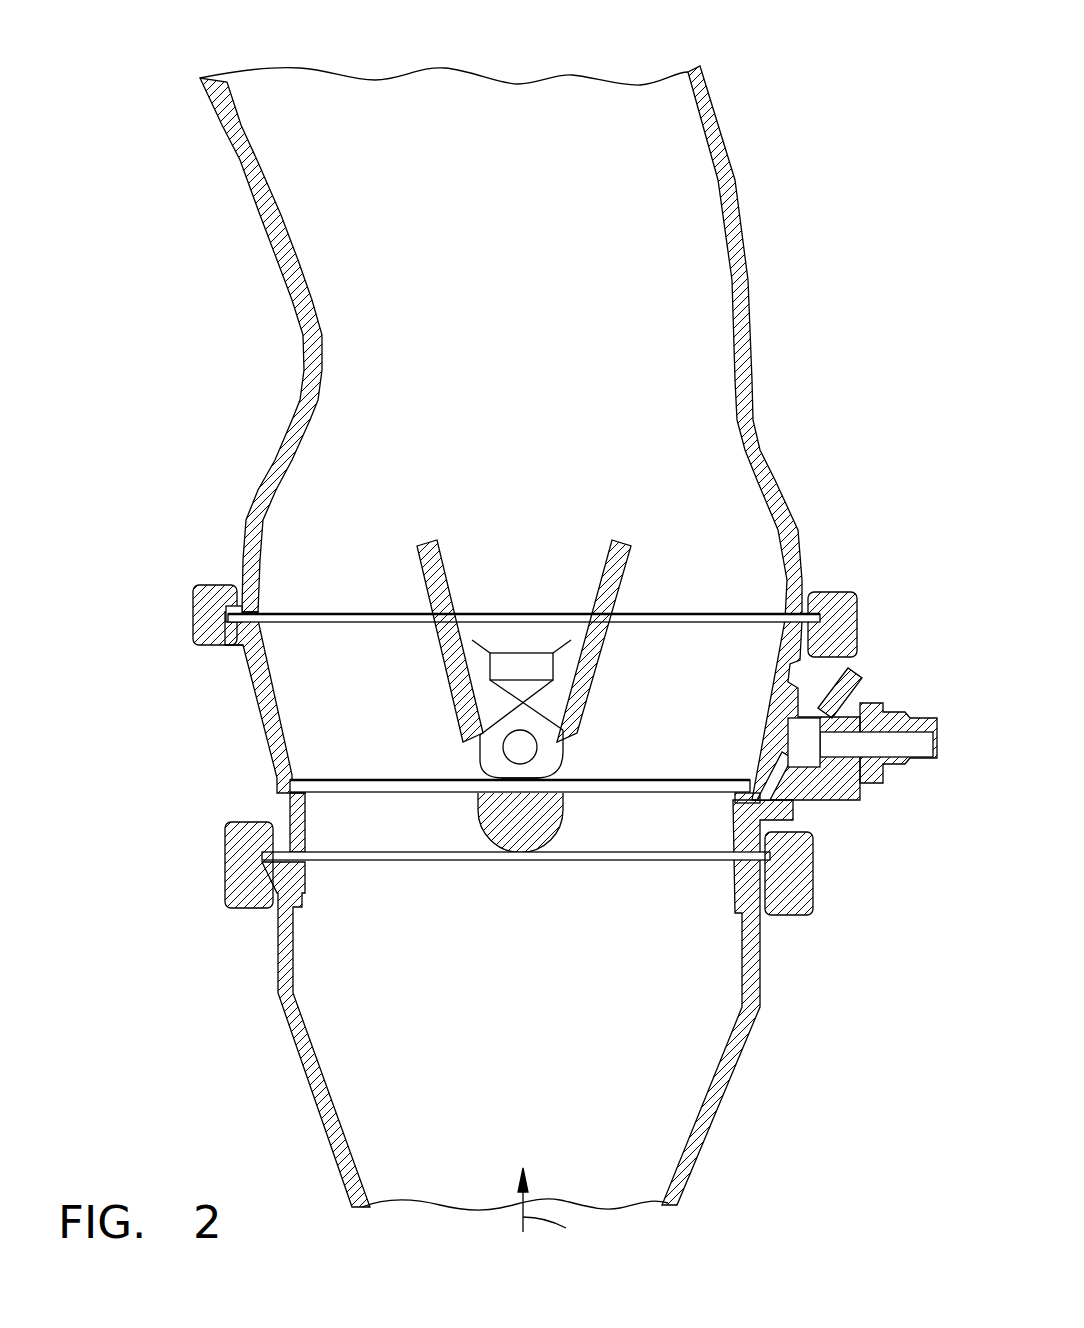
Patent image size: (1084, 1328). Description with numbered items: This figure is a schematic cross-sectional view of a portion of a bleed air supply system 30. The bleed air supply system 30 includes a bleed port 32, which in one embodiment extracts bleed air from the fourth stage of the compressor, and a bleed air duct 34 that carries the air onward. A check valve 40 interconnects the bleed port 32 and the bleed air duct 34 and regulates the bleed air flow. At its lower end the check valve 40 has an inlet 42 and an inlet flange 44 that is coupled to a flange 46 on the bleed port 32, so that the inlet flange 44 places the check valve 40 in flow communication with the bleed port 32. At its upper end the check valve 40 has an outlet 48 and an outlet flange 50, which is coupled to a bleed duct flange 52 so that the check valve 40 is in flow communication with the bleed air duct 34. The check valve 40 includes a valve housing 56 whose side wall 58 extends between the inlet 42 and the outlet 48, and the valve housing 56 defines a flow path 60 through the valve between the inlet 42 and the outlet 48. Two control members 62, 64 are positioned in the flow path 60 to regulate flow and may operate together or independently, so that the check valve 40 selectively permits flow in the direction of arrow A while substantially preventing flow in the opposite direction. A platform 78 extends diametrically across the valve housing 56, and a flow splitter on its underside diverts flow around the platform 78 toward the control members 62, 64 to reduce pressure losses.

The bleed air supply system 30 is at (680, 40).
The bleed port 32 is at (428, 1210).
The bleed air duct 34 is at (368, 66).
The check valve 40 is at (255, 702).
The inlet 42 is at (353, 865).
The inlet flange 44 is at (266, 856).
The flange 46 is at (273, 878).
The outlet 48 is at (368, 630).
The outlet flange 50 is at (190, 584).
The bleed duct flange 52 is at (245, 582).
The valve housing 56 is at (220, 642).
The side wall 58 is at (272, 738).
The flow path 60 is at (443, 770).
The control member 62 is at (440, 637).
The control member 64 is at (607, 643).
The platform 78 is at (545, 822).